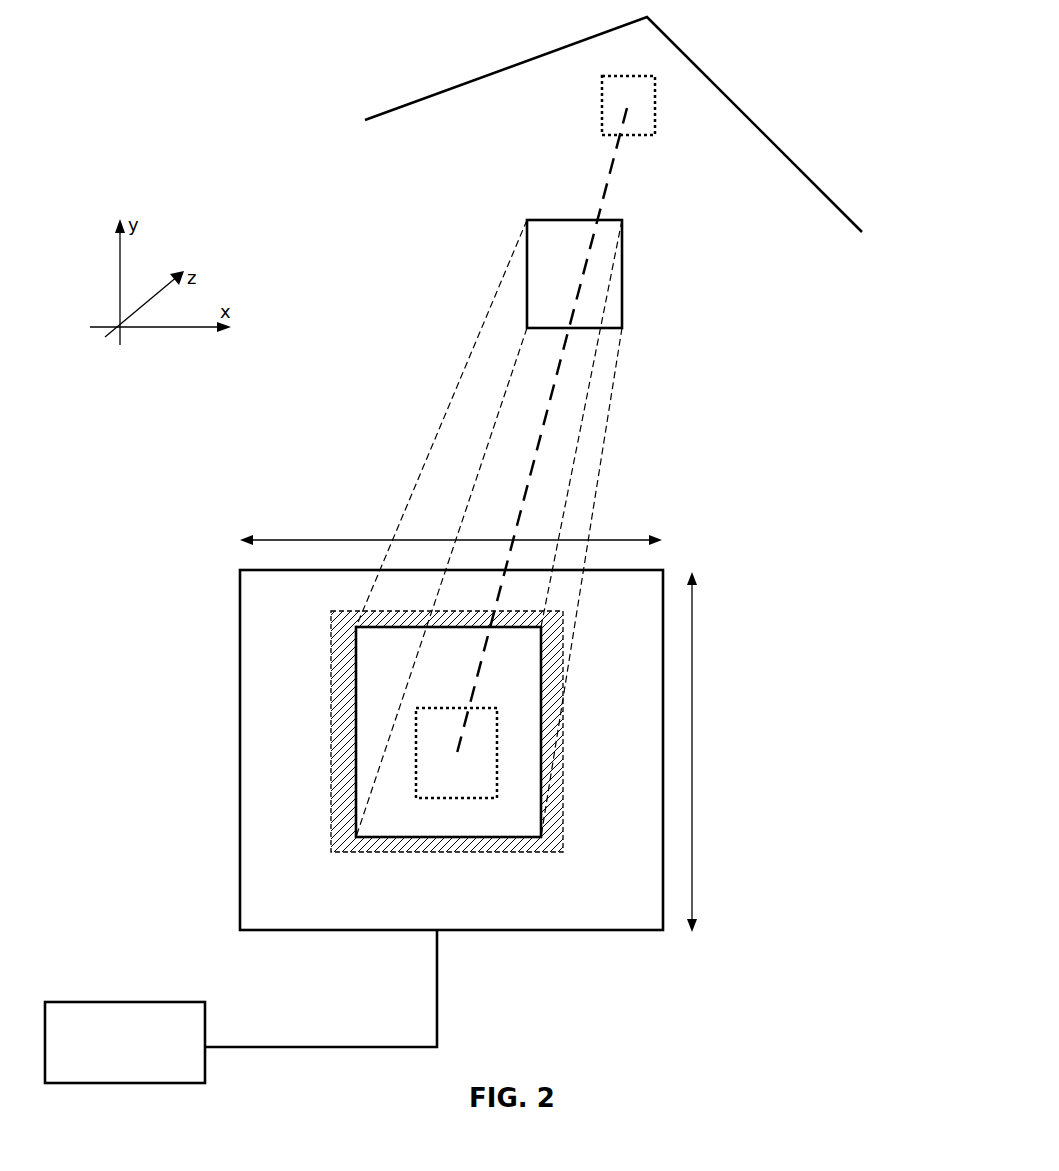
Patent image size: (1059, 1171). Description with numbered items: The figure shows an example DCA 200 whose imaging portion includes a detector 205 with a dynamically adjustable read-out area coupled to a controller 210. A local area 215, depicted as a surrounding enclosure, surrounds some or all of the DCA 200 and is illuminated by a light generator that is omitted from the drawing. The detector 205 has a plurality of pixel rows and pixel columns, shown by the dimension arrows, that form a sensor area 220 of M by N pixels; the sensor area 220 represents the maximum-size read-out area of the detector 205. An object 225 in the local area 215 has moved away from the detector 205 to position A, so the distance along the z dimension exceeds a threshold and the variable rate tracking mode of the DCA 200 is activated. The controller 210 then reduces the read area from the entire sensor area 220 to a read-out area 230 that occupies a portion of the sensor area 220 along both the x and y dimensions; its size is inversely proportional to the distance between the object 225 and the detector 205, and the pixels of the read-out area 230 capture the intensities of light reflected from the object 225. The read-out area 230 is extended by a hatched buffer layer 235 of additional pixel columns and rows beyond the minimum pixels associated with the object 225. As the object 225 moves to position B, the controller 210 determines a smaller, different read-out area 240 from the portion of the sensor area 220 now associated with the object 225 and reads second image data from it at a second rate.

The DCA 200 is at (430, 770).
The detector 205 is at (243, 608).
The controller 210 is at (241, 1006).
The local area 215 is at (365, 122).
The sensor area 220 is at (633, 916).
The object 225 is at (655, 135).
The read-out area 230 is at (528, 662).
The buffer layer 235 is at (347, 672).
The read-out area 240 is at (416, 762).